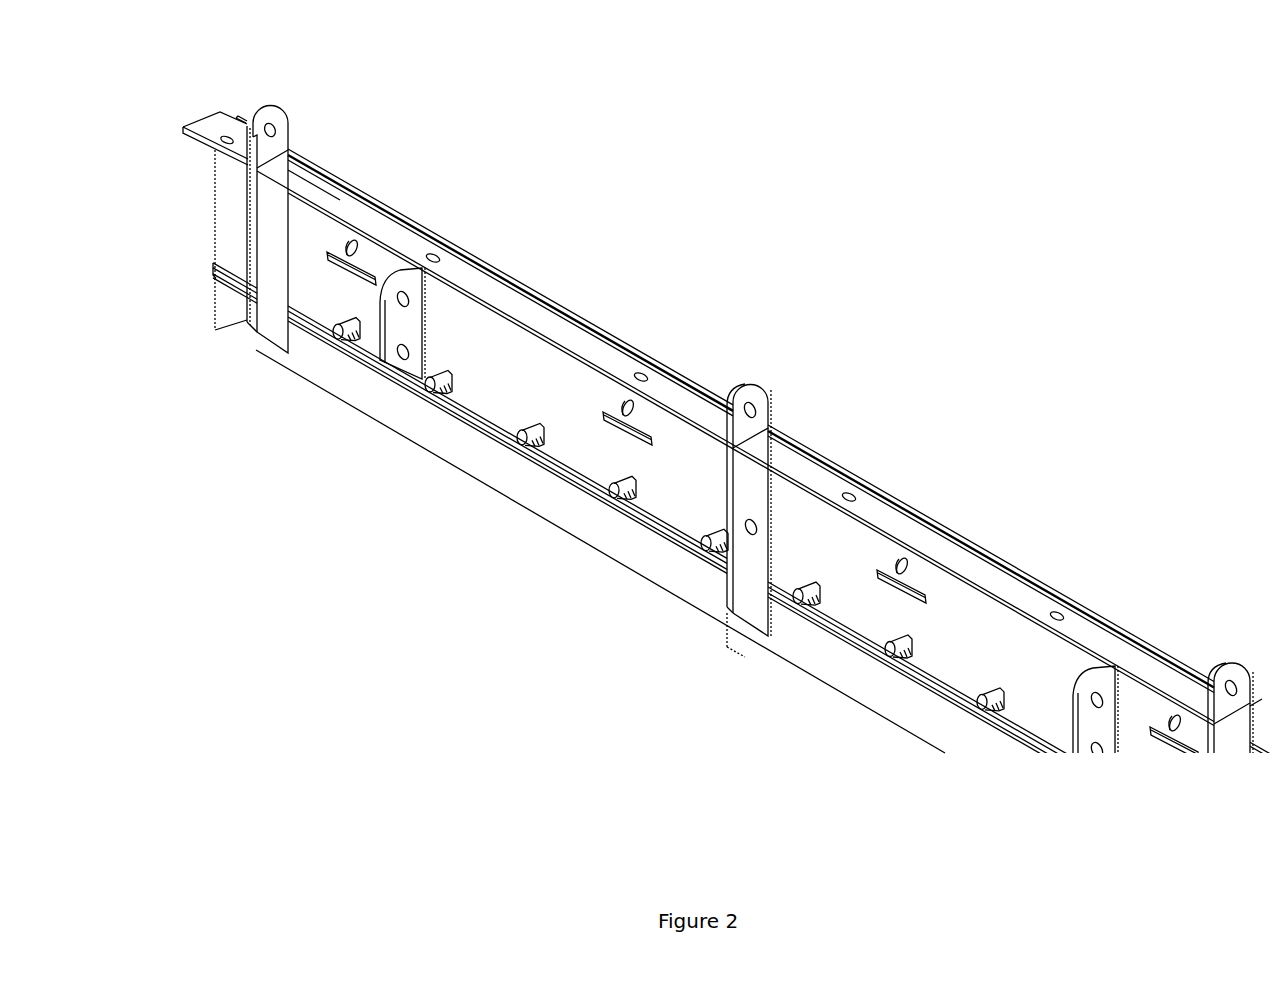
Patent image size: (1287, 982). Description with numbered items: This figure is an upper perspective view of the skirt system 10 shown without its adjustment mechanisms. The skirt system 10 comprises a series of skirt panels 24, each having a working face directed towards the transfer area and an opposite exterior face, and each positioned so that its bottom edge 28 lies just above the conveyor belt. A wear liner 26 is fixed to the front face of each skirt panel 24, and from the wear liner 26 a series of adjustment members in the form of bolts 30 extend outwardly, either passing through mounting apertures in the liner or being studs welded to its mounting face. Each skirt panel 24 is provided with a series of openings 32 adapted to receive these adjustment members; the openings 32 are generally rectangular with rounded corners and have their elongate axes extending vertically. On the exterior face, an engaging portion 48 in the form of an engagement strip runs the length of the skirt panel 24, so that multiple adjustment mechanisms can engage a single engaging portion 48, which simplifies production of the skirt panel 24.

The skirt system 10 is at (703, 433).
The skirt panel 24 is at (204, 230).
The wear liner 26 is at (772, 403).
The bottom edge 28 is at (547, 551).
The bolts 30 is at (720, 423).
The openings 32 is at (637, 579).
The engaging portion 48 is at (627, 529).